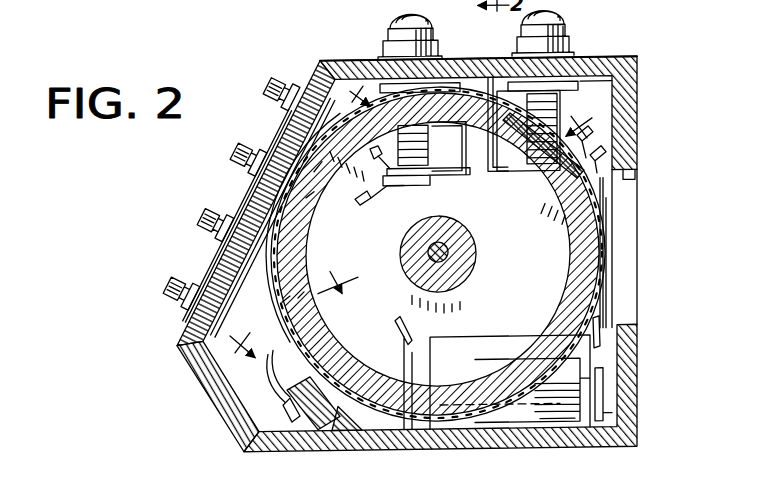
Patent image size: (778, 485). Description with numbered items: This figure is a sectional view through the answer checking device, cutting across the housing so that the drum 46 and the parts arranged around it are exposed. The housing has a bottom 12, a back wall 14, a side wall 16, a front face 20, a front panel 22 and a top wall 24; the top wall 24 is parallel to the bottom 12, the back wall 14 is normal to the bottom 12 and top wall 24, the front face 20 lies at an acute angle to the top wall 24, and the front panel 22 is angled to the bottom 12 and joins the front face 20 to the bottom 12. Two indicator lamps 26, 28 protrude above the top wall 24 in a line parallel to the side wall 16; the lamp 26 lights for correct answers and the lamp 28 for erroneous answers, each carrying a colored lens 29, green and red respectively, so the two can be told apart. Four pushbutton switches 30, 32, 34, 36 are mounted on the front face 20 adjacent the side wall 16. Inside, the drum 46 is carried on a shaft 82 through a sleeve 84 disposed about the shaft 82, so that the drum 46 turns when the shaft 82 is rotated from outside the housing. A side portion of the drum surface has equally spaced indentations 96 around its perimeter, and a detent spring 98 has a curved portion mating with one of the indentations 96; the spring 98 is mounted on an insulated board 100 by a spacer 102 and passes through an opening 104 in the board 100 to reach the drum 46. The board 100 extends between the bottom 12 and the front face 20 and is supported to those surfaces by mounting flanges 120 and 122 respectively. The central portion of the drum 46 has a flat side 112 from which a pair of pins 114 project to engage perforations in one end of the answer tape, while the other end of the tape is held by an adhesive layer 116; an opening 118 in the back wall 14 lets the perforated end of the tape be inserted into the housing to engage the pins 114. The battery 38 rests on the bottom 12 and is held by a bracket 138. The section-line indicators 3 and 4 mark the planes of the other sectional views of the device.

The bottom 12 is at (422, 446).
The back wall 14 is at (638, 128).
The side wall 16 is at (597, 86).
The front face 20 is at (262, 202).
The front panel 22 is at (215, 410).
The top wall 24 is at (488, 50).
The indicator lamp 26 is at (392, 30).
The indicator lamp 28 is at (566, 31).
The lens 29 is at (400, 22).
The pushbutton switch 30 is at (278, 86).
The pushbutton switch 32 is at (242, 158).
The pushbutton switch 34 is at (210, 226).
The pushbutton switch 36 is at (176, 292).
The battery 38 is at (571, 430).
The drum 46 is at (345, 337).
The shaft 82 is at (470, 247).
The sleeve 84 is at (468, 282).
The indentations 96 is at (608, 248).
The detent spring 98 is at (272, 372).
The insulated board 100 is at (316, 227).
The spacer 102 is at (293, 445).
The opening 104 is at (296, 290).
The flat side 112 is at (497, 147).
The pins 114 is at (523, 170).
The adhesive layer 116 is at (575, 184).
The opening 118 is at (636, 180).
The mounting flange 120 is at (350, 439).
The mounting flange 122 is at (222, 266).
The bracket 138 is at (507, 430).
The section line 3 is at (465, 107).
The section line 4 is at (286, 311).